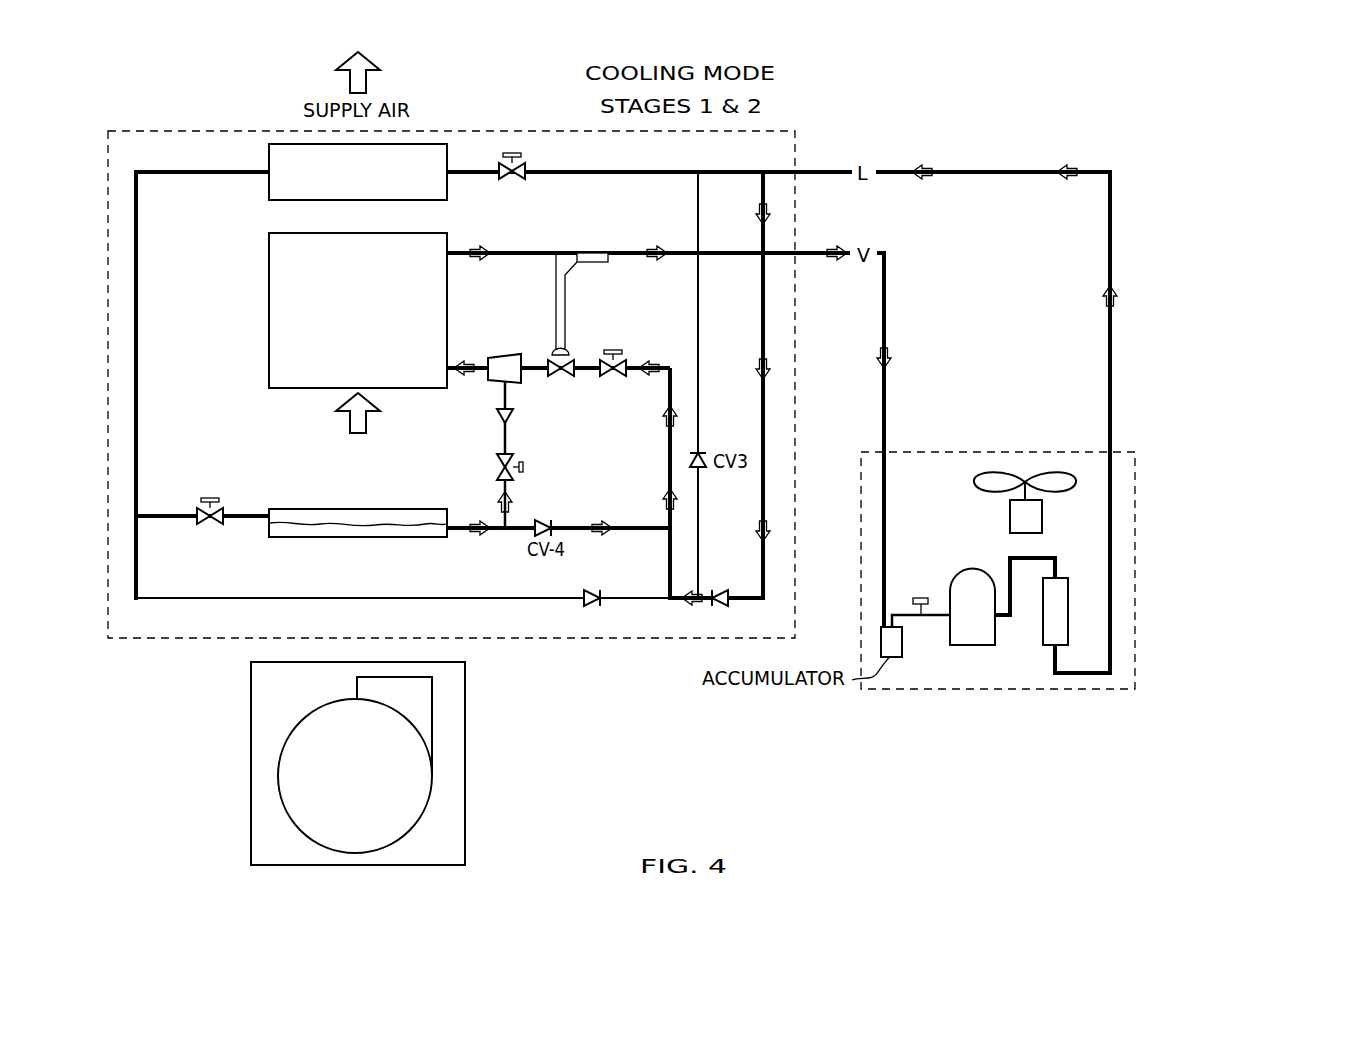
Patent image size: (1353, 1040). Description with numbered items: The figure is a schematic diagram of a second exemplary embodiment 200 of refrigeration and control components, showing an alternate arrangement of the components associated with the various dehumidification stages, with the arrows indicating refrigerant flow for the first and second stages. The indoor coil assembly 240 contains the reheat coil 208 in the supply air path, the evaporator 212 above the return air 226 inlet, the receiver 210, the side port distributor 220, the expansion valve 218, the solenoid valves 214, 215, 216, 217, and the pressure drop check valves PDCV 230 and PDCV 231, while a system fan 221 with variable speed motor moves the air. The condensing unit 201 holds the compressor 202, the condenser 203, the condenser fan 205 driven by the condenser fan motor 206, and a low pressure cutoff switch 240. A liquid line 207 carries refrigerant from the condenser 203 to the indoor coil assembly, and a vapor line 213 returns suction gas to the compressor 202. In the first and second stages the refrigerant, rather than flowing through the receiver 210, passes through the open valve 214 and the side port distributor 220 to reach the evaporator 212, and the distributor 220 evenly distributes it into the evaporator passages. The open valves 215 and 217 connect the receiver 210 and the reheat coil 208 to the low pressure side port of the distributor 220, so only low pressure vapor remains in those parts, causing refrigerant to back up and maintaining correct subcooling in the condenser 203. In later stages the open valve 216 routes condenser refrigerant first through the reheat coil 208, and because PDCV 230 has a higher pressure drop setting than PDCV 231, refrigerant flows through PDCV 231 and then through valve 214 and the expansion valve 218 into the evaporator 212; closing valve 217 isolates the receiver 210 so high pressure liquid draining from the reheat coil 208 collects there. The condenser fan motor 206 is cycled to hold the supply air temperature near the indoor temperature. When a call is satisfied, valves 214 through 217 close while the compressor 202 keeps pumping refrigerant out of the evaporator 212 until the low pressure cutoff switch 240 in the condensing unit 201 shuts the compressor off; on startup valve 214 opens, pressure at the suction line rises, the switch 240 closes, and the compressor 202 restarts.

The second exemplary embodiment 200 is at (1165, 106).
The condensing unit 201 is at (1135, 466).
The compressor 202 is at (966, 645).
The condenser 203 is at (1043, 645).
The condenser fan blades 205 is at (995, 472).
The condenser fan motor 206 is at (1010, 520).
The liquid line 207 is at (990, 172).
The reheat coil 208 is at (269, 157).
The receiver 210 is at (358, 534).
The evaporator 212 is at (269, 270).
The vapor line 213 is at (884, 310).
The solenoid valve 214 is at (600, 362).
The solenoid valve 215 is at (210, 524).
The solenoid valve 216 is at (506, 179).
The solenoid valve 217 is at (511, 460).
The expansion valve 218 is at (593, 408).
The side port distributor 220 is at (503, 356).
The system fan with variable speed motor 221 is at (251, 705).
The return air 226 is at (358, 423).
The PDCV 230 is at (752, 612).
The PDCV 231 is at (586, 592).
The low pressure cutoff switch 240 is at (795, 142).